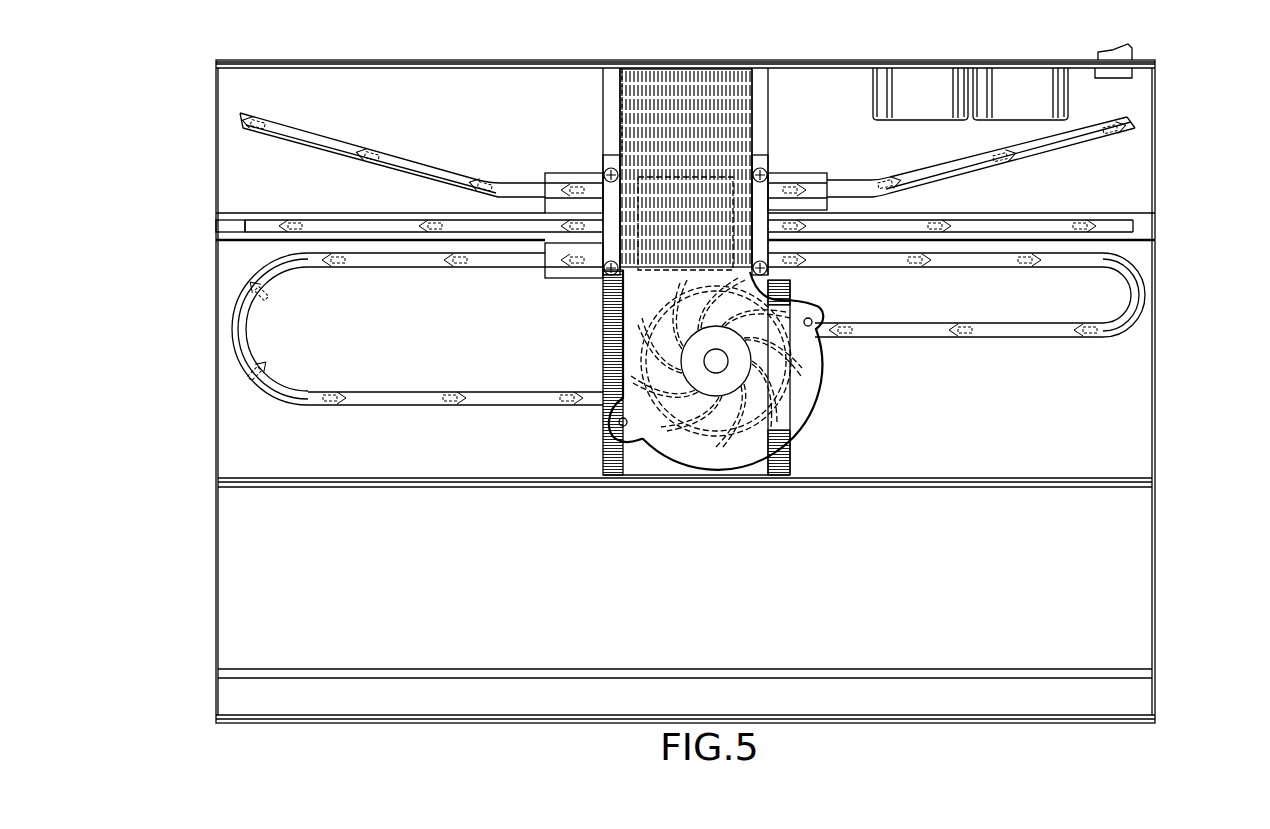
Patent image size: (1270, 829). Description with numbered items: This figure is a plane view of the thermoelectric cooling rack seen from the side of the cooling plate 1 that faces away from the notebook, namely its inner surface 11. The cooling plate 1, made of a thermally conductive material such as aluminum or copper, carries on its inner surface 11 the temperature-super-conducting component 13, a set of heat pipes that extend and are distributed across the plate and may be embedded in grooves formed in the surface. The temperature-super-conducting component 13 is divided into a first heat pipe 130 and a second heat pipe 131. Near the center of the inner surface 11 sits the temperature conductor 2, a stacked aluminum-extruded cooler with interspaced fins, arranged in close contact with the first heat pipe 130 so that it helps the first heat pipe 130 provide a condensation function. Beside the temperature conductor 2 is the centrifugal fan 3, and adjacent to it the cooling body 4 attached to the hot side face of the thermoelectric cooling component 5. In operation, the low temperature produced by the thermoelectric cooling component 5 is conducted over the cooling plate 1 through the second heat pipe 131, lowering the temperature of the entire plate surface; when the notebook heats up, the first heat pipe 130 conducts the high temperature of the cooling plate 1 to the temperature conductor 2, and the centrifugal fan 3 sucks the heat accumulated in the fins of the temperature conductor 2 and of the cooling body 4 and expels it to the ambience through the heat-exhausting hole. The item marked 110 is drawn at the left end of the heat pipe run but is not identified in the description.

The cooling plate 1 is at (208, 522).
The inner surface 11 is at (233, 440).
The air inlet 110 is at (220, 227).
The temperature-super-conducting component 13 is at (710, 209).
The first heat pipe 130 is at (1133, 295).
The second heat pipe 131 is at (1107, 226).
The temperature conductor 2 is at (600, 345).
The centrifugal fan 3 is at (793, 390).
The cooling body 4 is at (760, 103).
The thermoelectric cooling component 5 is at (685, 178).